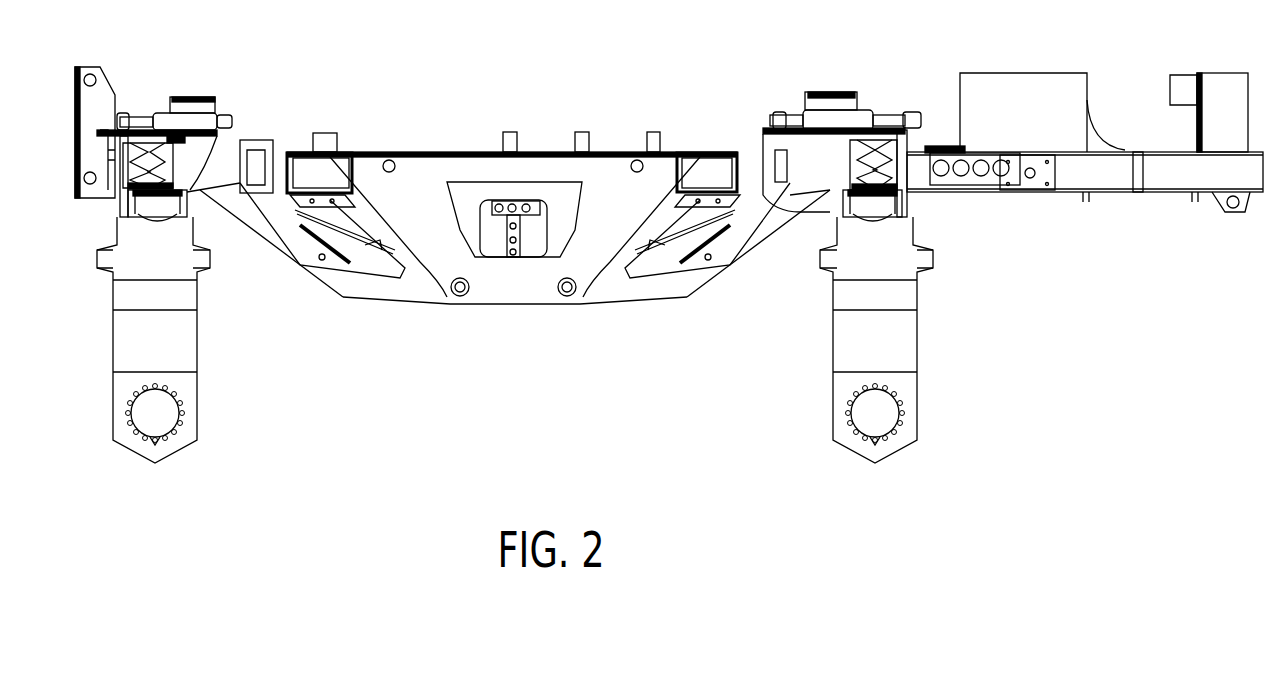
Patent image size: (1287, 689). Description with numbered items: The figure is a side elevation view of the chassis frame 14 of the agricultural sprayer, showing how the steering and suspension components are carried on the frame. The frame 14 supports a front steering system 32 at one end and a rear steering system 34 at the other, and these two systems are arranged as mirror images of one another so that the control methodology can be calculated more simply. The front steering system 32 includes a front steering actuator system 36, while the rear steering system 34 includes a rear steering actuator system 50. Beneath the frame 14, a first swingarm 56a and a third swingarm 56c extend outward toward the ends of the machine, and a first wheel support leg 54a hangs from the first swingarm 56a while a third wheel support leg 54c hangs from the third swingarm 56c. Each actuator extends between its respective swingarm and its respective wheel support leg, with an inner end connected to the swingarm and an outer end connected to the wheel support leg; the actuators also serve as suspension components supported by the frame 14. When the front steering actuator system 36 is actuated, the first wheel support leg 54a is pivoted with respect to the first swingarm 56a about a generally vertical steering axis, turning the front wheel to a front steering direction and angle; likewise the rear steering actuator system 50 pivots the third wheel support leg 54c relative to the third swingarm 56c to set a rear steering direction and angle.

The frame 14 is at (466, 152).
The front steering system 32 is at (190, 62).
The rear steering system 34 is at (872, 64).
The front steering actuator system 36 is at (243, 97).
The rear steering actuator system 50 is at (810, 96).
The first wheel support leg 54a is at (127, 298).
The third wheel support leg 54c is at (880, 275).
The first swingarm 56a is at (355, 287).
The third swingarm 56c is at (665, 285).